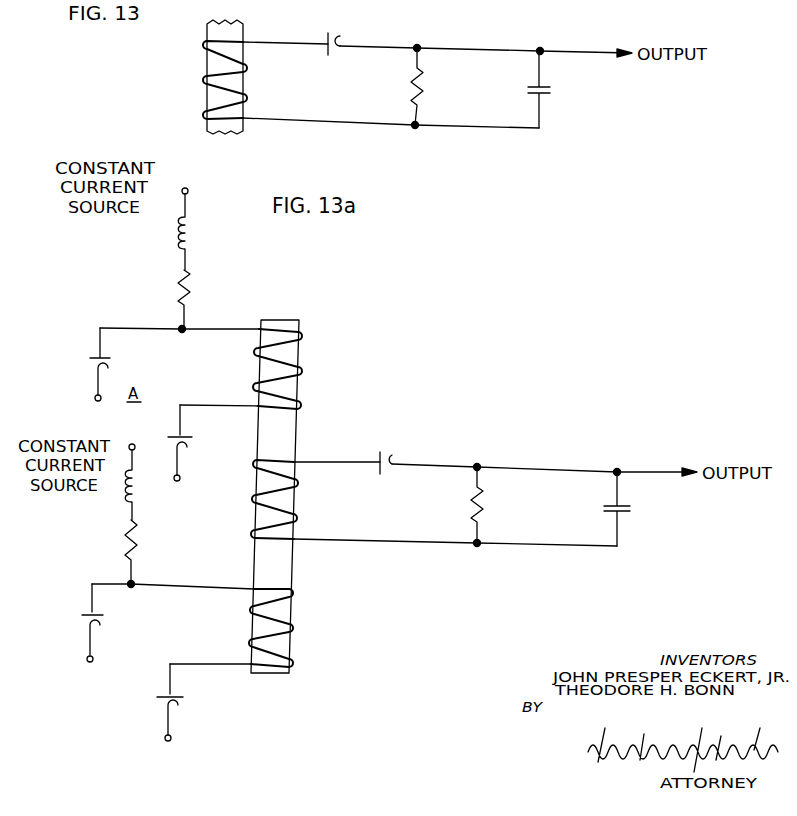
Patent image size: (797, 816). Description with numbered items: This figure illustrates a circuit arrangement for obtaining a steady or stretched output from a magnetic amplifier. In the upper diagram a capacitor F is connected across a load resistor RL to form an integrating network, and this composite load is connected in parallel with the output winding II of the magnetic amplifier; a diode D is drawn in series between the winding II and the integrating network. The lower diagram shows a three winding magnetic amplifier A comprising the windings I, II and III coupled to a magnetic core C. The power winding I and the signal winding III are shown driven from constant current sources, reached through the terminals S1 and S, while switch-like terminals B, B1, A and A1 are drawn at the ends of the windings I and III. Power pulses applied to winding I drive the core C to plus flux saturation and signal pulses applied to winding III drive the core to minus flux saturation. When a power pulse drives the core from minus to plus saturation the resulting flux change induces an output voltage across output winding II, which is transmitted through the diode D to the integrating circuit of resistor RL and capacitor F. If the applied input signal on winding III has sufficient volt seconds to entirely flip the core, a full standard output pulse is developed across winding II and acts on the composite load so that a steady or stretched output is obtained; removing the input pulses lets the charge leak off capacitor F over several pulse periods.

In FIG. 13A, the power winding I is at (264, 369).
In FIG. 13, the output winding II is at (204, 80).
In FIG. 13A, the output winding II is at (259, 499).
In FIG. 13A, the signal winding III is at (251, 628).
In FIG. 13A, the three winding magnetic amplifier A is at (92, 634).
In FIG. 13A, the switch terminal A1 is at (170, 716).
In FIG. 13A, the switch terminal B is at (100, 374).
In FIG. 13A, the switch terminal B1 is at (180, 453).
In FIG. 13A, the constant current source terminal S is at (108, 464).
In FIG. 13A, the constant current source terminal S1 is at (150, 192).
In FIG. 13A, the magnetic core C is at (274, 671).
In FIG. 13, the diode D is at (335, 52).
In FIG. 13A, the diode D is at (387, 472).
In FIG. 13, the load resistor RL is at (428, 86).
In FIG. 13A, the load resistor RL is at (488, 505).
In FIG. 13, the capacitor F is at (545, 89).
In FIG. 13A, the capacitor F is at (622, 509).